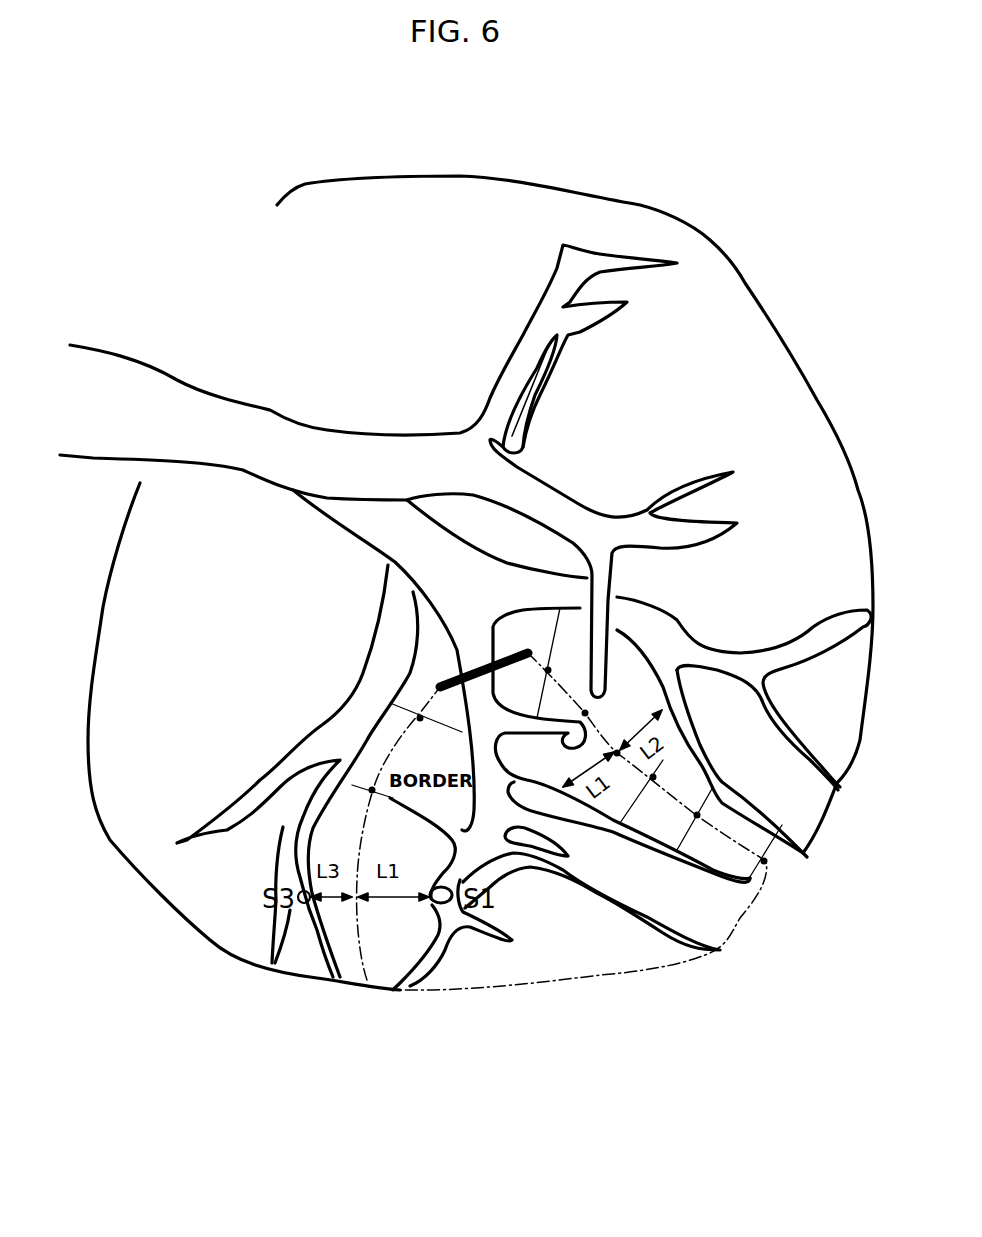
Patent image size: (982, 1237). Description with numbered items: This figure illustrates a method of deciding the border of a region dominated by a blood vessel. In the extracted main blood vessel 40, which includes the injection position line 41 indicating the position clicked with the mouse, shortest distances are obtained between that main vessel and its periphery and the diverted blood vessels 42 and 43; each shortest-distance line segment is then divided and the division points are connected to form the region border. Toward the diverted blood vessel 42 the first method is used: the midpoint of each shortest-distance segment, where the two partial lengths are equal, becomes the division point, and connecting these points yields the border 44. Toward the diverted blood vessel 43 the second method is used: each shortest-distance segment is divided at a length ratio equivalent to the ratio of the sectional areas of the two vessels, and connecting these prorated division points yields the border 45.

The main blood vessel 40 is at (312, 425).
The injection position line 41 is at (473, 670).
The diverted blood vessel 42 is at (767, 650).
The diverted blood vessel 43 is at (368, 673).
The border 44 is at (728, 840).
The border 45 is at (357, 927).